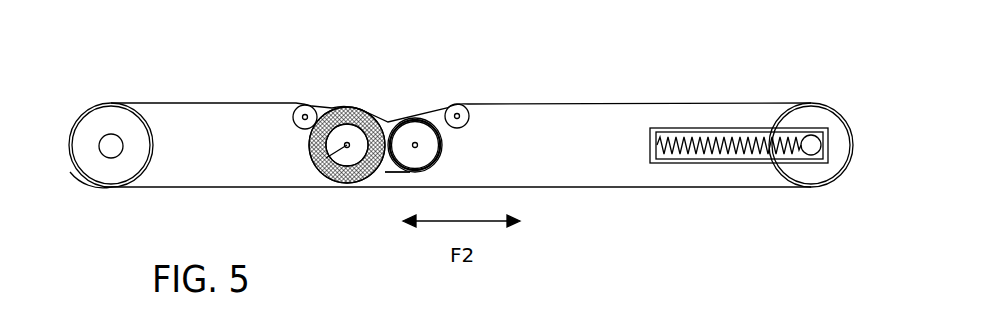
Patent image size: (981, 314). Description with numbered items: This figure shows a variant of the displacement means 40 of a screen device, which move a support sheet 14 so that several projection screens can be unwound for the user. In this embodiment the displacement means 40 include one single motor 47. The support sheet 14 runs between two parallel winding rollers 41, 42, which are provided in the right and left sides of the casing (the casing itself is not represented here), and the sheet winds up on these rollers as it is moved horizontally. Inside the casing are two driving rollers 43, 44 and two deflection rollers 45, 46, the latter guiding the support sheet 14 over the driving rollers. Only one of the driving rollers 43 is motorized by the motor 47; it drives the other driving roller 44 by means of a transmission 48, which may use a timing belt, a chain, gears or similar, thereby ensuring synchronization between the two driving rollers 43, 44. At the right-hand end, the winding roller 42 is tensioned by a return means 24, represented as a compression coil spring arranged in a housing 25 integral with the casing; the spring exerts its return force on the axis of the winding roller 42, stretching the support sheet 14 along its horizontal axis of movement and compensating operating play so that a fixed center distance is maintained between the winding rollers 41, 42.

The support sheet 14 is at (610, 190).
The return means 24 is at (688, 140).
The housing 25 is at (703, 163).
The displacement means 40 is at (98, 98).
The winding roller 41 is at (100, 180).
The winding roller 42 is at (807, 173).
The driving roller 43 is at (339, 108).
The driving roller 44 is at (430, 156).
The deflection roller 45 is at (302, 106).
The deflection roller 46 is at (464, 103).
The motor 47 is at (346, 144).
The transmission 48 is at (388, 172).